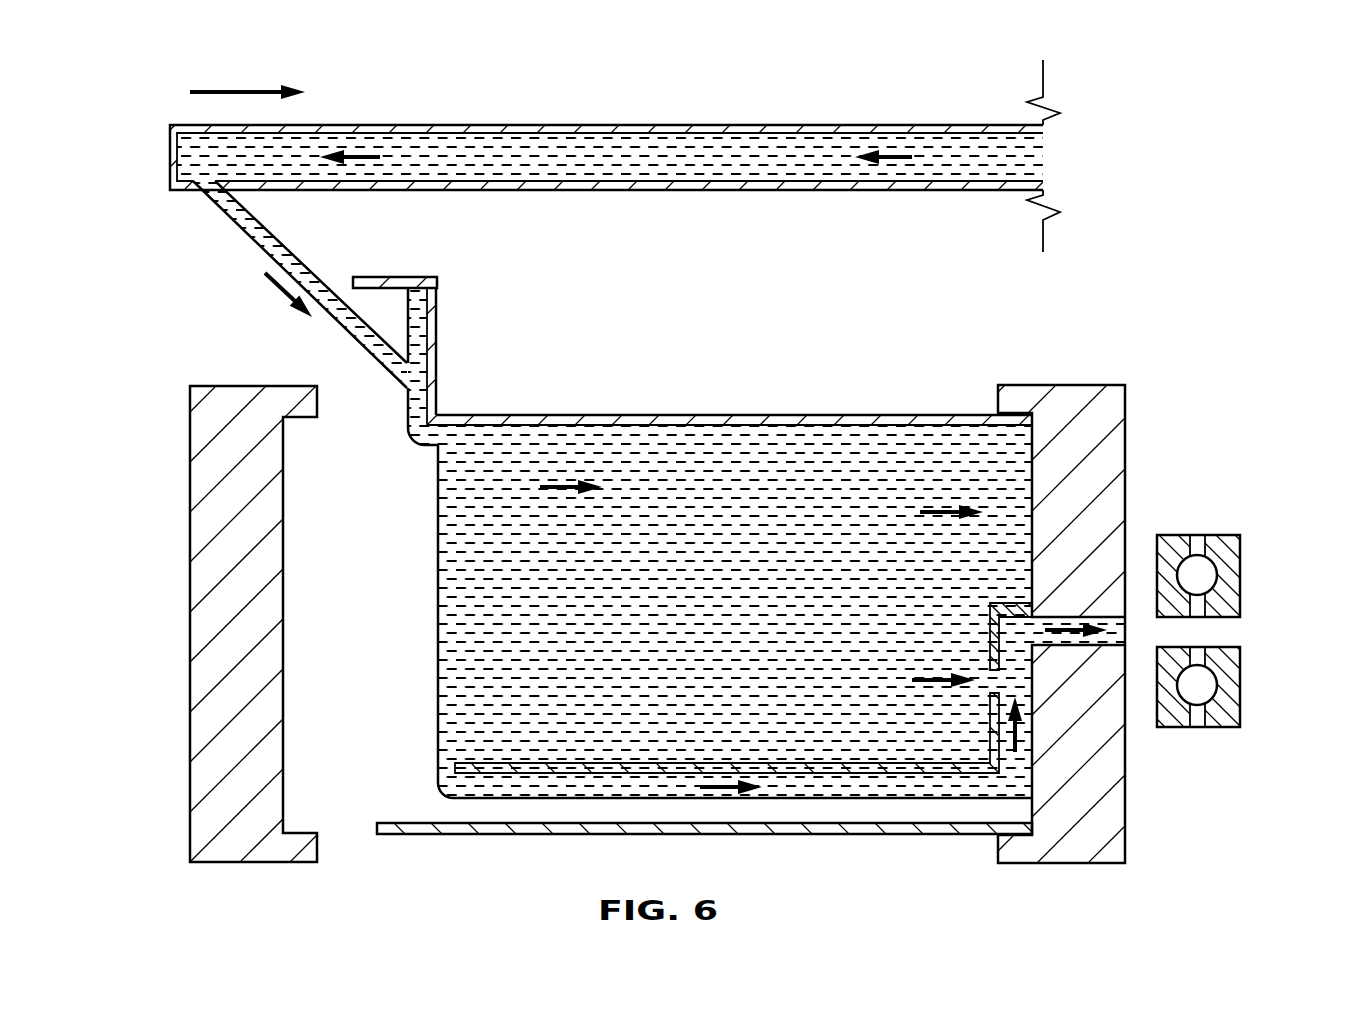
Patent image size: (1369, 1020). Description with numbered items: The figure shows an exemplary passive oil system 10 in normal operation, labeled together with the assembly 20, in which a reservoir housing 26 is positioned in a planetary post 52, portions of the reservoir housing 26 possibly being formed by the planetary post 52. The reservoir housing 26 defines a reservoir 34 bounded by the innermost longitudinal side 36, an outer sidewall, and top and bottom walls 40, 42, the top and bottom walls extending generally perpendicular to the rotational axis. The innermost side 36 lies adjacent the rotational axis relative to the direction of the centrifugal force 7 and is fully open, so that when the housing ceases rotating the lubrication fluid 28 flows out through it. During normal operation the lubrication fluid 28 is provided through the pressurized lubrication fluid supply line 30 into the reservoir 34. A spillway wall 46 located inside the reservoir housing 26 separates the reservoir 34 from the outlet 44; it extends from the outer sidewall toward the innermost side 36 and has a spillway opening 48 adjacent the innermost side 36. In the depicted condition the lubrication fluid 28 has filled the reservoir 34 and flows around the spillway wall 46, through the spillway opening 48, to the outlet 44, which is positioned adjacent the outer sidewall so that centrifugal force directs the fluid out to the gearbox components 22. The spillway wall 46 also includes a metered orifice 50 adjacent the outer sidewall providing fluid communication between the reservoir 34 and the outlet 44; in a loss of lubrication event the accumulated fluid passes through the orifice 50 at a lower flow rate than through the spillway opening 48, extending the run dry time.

The centrifugal force 7 is at (236, 90).
The passive oil system 10 is at (951, 68).
The fluid system 20 is at (684, 464).
The lubrication fluid supply line 30 is at (738, 125).
The lubrication fluid 28 is at (252, 237).
The reservoir housing 26 is at (880, 402).
The top wall 40 is at (800, 414).
The reservoir 34 is at (738, 615).
The innermost longitudinal side 36 is at (414, 643).
The spillway opening 48 is at (445, 770).
The planetary post 52 is at (1118, 452).
The outlet 44 is at (1012, 642).
The spillway wall 46 is at (590, 764).
The orifice 50 is at (993, 692).
The bottom wall 42 is at (915, 835).
The gearbox component 22 is at (1235, 562).